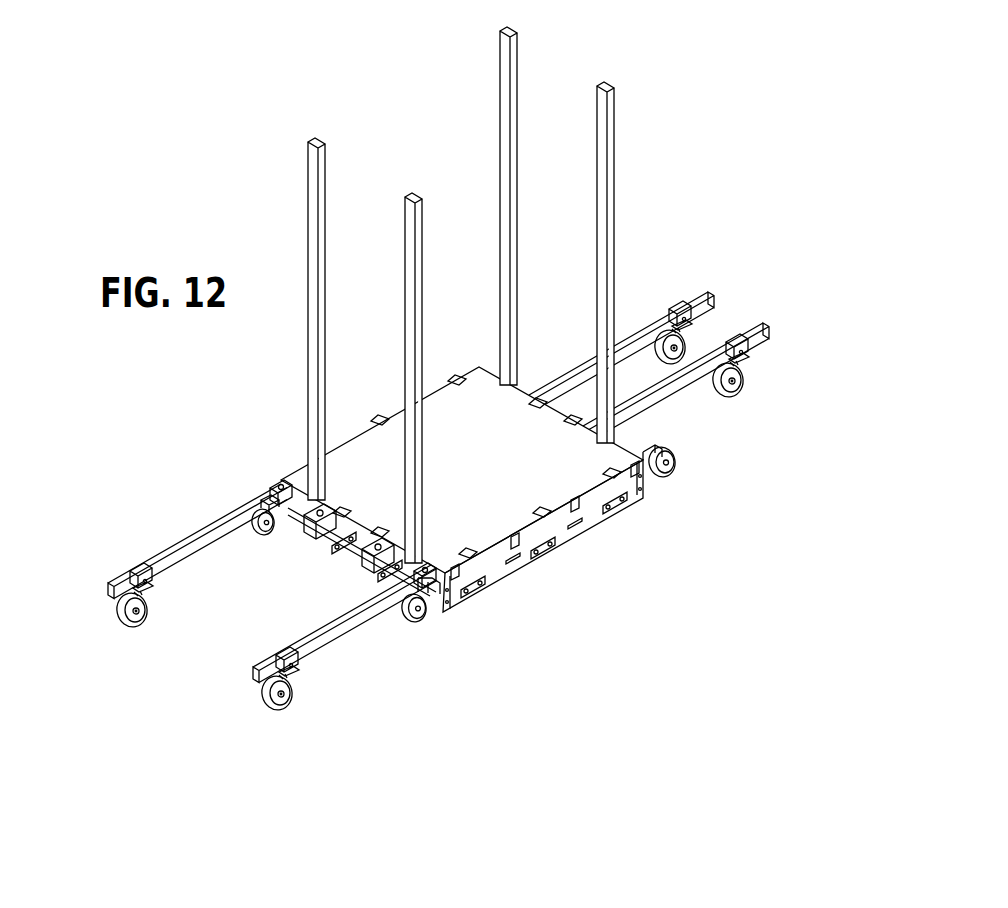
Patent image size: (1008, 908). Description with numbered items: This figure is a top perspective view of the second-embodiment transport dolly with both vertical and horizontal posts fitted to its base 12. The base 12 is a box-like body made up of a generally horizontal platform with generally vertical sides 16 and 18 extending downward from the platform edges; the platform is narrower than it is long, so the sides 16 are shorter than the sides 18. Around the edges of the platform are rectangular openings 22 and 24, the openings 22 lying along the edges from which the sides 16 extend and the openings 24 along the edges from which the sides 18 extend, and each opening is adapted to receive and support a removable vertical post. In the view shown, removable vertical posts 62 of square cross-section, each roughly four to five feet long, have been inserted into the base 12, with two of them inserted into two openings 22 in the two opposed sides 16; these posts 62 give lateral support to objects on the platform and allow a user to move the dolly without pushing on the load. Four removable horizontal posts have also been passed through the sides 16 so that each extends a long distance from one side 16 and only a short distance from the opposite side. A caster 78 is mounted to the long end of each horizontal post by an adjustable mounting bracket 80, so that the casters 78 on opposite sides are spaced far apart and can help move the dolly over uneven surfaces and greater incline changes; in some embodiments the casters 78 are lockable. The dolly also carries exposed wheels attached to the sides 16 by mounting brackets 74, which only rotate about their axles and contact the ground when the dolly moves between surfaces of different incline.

The base 12 is at (593, 545).
The side 16 is at (330, 554).
The side 18 is at (507, 588).
The opening 22 is at (345, 512).
The opening 24 is at (380, 419).
The removable vertical post 62 is at (326, 215).
The mounting bracket 74 is at (209, 526).
The caster 78 is at (748, 398).
The adjustable mounting bracket 80 is at (140, 565).